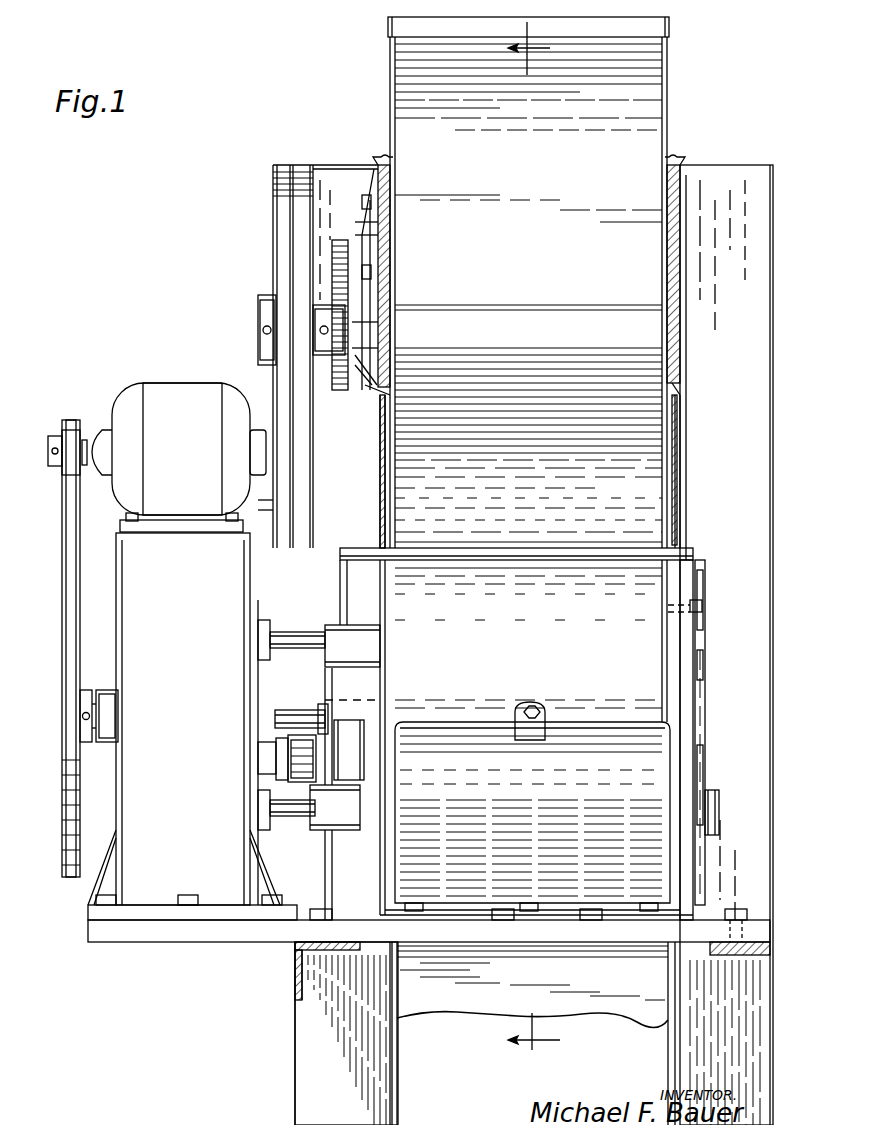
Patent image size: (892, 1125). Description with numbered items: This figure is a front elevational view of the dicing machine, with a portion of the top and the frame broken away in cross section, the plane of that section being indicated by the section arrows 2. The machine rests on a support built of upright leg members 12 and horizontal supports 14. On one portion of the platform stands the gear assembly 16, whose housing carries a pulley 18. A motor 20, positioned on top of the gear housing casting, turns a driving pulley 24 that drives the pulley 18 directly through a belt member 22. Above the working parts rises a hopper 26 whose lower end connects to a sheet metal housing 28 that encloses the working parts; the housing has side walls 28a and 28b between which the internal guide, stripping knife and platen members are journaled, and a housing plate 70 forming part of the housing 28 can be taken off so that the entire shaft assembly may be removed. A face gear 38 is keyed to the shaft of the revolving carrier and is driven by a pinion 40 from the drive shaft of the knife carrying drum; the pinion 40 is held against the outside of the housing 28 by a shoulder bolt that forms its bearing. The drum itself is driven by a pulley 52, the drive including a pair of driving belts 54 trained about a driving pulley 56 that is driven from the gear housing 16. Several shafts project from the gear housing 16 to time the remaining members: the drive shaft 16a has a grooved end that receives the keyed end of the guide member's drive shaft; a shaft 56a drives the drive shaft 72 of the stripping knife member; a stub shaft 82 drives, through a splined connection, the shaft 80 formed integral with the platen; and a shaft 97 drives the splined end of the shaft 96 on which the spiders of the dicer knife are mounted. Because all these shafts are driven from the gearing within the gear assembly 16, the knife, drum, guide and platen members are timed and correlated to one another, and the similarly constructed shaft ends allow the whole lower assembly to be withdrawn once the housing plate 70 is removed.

The section line 2- 2 is at (532, 549).
The upright leg members 12 is at (743, 177).
The horizontal supports 14 is at (298, 1000).
The gear assembly 16 is at (130, 800).
The drive shaft 16a is at (258, 640).
The pulley 18 is at (62, 722).
The motor 20 is at (166, 395).
The belt member 22 is at (67, 522).
The driving pulley 24 is at (63, 435).
The hopper 26 is at (395, 58).
The sheet metal housing 28 is at (523, 532).
The side wall 28a is at (680, 456).
The side wall 28b is at (380, 456).
The face gear 38 is at (334, 243).
The pinion 40 is at (190, 945).
The pulley 52 is at (262, 307).
The driving belts 54 is at (298, 508).
The driving pulley 56 is at (287, 771).
The shaft 56a is at (282, 745).
The housing plate 70 is at (695, 690).
The drive shaft 72 is at (325, 745).
The shaft 80 is at (352, 722).
The stub shaft 82 is at (287, 711).
The shaft 96 is at (347, 833).
The shaft 97 is at (280, 808).